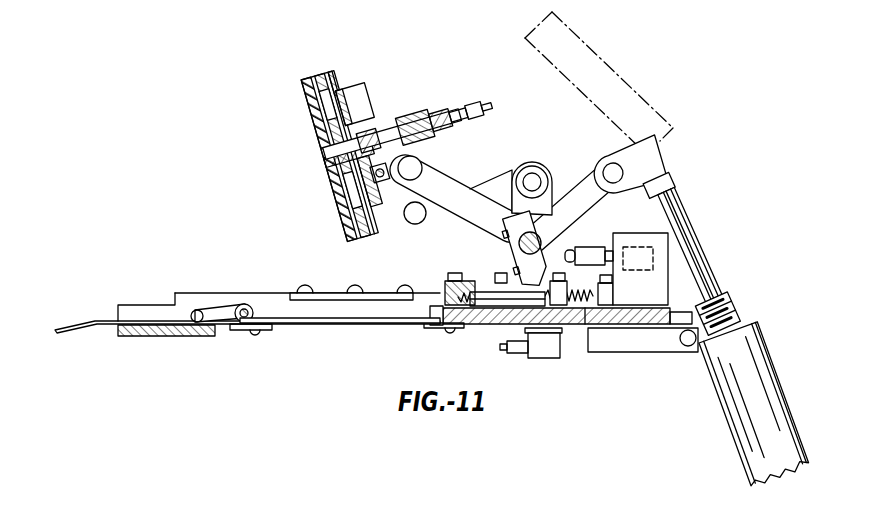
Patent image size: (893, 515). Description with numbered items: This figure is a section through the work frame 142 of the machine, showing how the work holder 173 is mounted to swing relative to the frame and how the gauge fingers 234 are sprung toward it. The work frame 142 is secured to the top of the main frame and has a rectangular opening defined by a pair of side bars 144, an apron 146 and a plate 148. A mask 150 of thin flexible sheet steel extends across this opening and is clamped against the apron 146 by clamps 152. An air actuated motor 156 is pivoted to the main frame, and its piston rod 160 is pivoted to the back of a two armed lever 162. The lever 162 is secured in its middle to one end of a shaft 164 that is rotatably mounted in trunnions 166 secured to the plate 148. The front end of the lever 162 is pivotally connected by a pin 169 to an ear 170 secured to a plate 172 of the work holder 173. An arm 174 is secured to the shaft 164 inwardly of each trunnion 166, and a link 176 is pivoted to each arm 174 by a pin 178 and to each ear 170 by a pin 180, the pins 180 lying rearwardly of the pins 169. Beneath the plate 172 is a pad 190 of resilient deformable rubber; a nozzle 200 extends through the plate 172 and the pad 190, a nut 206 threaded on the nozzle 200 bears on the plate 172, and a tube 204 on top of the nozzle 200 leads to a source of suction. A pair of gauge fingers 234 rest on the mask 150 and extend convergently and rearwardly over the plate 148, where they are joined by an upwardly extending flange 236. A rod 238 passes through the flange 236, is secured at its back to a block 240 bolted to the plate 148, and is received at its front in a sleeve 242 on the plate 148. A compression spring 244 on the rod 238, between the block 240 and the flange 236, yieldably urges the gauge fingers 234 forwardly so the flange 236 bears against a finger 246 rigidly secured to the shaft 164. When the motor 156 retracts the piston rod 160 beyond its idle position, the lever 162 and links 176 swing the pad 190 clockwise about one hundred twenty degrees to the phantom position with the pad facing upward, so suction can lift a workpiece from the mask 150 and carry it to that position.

The work frame 142 is at (185, 270).
The side bars 144 is at (274, 297).
The apron 146 is at (165, 317).
The plate 148 is at (481, 318).
The mask 150 is at (283, 327).
The clamps 152 is at (223, 310).
The air actuated motor 156 is at (753, 366).
The piston rod 160 is at (680, 223).
The two armed lever 162 is at (576, 188).
The shaft 164 is at (545, 243).
The trunnions 166 is at (508, 276).
The pins 169 is at (412, 168).
The ears 170 is at (360, 97).
The plate 172 is at (328, 72).
The work holder 173 is at (583, 61).
The arm 174 is at (513, 171).
The link 176 is at (497, 190).
The pin 178 is at (530, 180).
The pin 180 is at (425, 228).
The pad 190 is at (306, 118).
The nozzle 200 is at (398, 118).
The tube 204 is at (456, 112).
The nut 206 is at (380, 120).
The gauge fingers 234 is at (424, 326).
The flange 236 is at (560, 284).
The rod 238 is at (519, 310).
The block 240 is at (616, 303).
The sleeve 242 is at (447, 288).
The compression spring 244 is at (643, 339).
The finger 246 is at (562, 255).